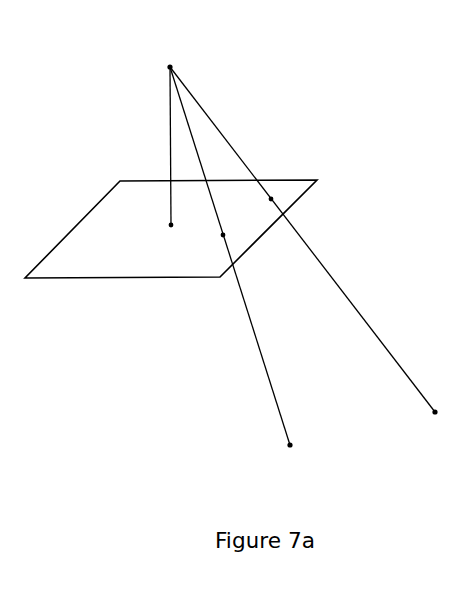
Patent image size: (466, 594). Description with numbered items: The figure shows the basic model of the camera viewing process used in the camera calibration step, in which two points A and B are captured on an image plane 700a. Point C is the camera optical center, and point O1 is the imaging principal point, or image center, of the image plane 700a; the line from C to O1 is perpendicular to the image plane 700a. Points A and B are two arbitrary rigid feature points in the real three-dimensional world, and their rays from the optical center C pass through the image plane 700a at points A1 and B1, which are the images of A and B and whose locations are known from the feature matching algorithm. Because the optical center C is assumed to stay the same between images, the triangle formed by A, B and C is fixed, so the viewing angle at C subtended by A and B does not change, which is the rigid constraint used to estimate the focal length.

The image plane 700a is at (51, 279).
The camera optical center C is at (166, 60).
The imaging principal point O1 is at (165, 232).
The image of point A A1 is at (214, 243).
The image of point B B1 is at (263, 210).
The rigid feature point A is at (297, 450).
The rigid feature point B is at (441, 416).